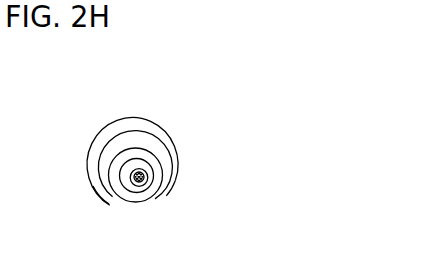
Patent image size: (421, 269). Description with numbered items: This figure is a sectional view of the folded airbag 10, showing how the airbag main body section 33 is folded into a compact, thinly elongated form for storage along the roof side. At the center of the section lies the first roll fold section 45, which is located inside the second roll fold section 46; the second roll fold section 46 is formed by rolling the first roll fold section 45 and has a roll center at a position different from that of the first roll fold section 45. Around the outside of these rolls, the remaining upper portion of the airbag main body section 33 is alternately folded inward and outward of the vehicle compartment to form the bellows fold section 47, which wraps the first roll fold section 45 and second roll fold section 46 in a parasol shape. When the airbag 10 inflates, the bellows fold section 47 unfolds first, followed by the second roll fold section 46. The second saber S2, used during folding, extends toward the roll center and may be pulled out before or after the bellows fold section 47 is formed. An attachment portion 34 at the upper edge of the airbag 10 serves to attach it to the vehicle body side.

The airbag 10 is at (167, 111).
The attachment portion 34 is at (125, 103).
The airbag main body section 33 is at (179, 170).
The bellows fold section 47 is at (168, 195).
The second roll fold section 46 is at (121, 196).
The first roll fold section 45 is at (149, 191).
The second saber S2 is at (141, 175).